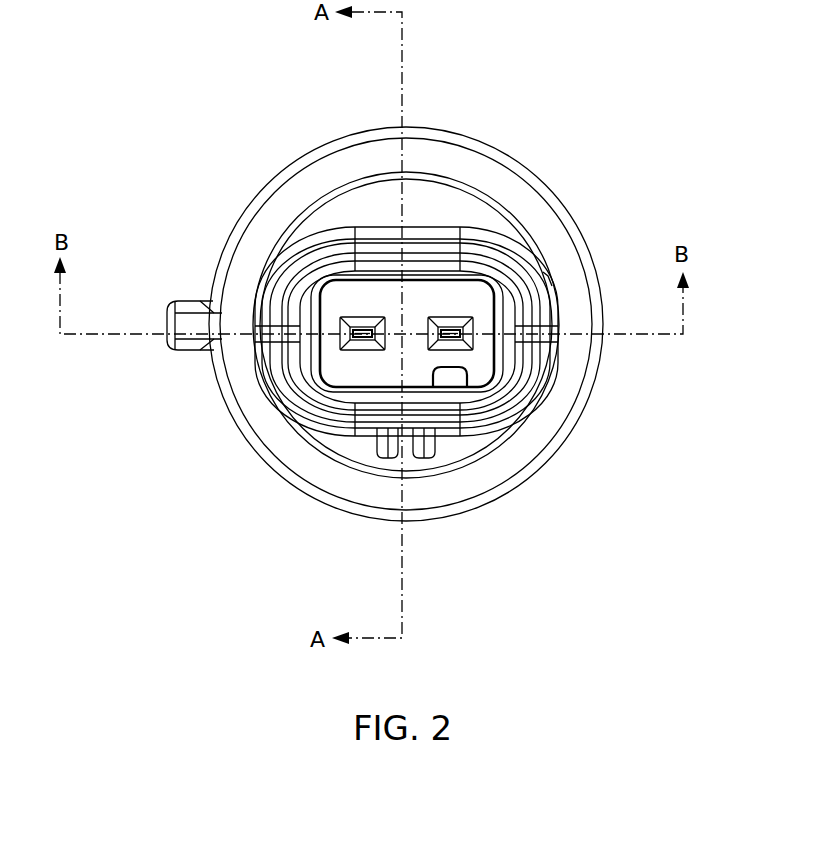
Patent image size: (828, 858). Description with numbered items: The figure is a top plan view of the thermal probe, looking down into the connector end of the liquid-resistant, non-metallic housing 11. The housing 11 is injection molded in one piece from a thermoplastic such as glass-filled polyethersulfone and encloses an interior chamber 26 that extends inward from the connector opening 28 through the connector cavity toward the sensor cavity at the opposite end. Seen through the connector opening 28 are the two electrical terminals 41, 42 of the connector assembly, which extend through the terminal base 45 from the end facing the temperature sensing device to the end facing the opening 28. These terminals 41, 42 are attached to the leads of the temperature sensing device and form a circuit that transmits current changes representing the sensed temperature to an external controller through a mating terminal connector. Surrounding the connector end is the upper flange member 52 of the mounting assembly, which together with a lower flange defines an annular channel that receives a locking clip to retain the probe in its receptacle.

The housing 11 is at (437, 284).
The interior chamber 26 is at (347, 367).
The connector opening 28 is at (508, 248).
The electrical terminal 41 is at (365, 318).
The electrical terminal 42 is at (453, 338).
The terminal base 45 is at (422, 363).
The upper flange member 52 is at (511, 178).